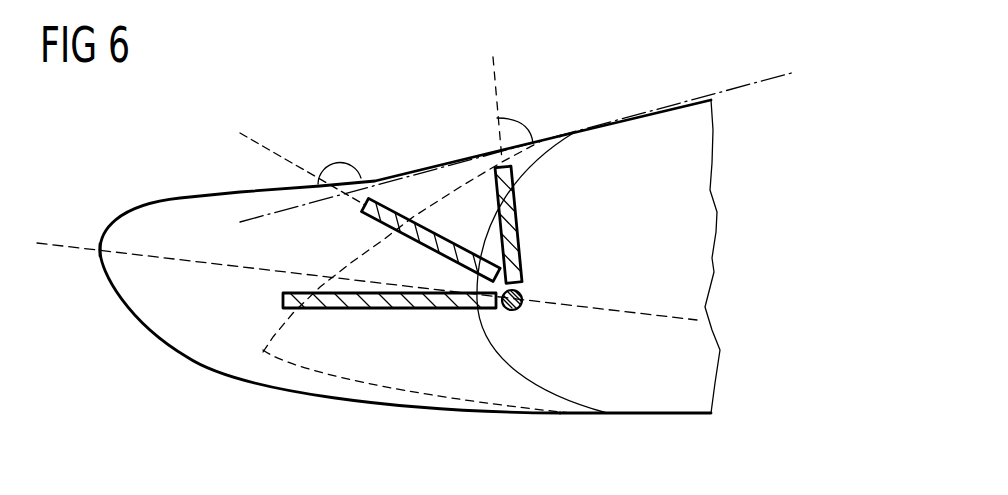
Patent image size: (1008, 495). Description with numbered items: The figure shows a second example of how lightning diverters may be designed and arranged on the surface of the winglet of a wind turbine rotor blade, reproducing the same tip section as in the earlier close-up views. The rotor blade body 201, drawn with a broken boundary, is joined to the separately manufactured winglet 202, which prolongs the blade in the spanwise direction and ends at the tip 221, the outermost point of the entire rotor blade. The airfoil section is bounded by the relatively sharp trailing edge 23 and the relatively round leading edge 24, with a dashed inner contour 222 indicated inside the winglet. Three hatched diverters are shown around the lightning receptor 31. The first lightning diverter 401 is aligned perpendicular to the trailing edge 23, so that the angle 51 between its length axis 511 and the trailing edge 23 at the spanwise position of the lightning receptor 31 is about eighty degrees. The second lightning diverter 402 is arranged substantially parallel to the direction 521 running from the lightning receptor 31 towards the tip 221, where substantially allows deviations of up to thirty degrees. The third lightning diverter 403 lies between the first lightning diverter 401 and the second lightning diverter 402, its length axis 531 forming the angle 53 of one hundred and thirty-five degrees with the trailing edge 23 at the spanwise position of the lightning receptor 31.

The winglet 202 is at (182, 210).
The rotor blade body 201 is at (705, 251).
The trailing edge 23 is at (643, 112).
The leading edge 24 is at (550, 416).
The tip 221 is at (100, 251).
The inner contour of nose cap 222 is at (262, 353).
The direction of the lightning receptor towards the tip 521 is at (62, 245).
The length axis of the third lightning diverter 531 is at (240, 134).
The length axis of the first lightning diverter 511 is at (493, 85).
The angle 51 is at (512, 133).
The angle 53 is at (343, 174).
The first lightning diverter 401 is at (520, 213).
The second lightning diverter 402 is at (415, 309).
The third lightning diverter 403 is at (385, 207).
The lightning receptor 31 is at (522, 295).